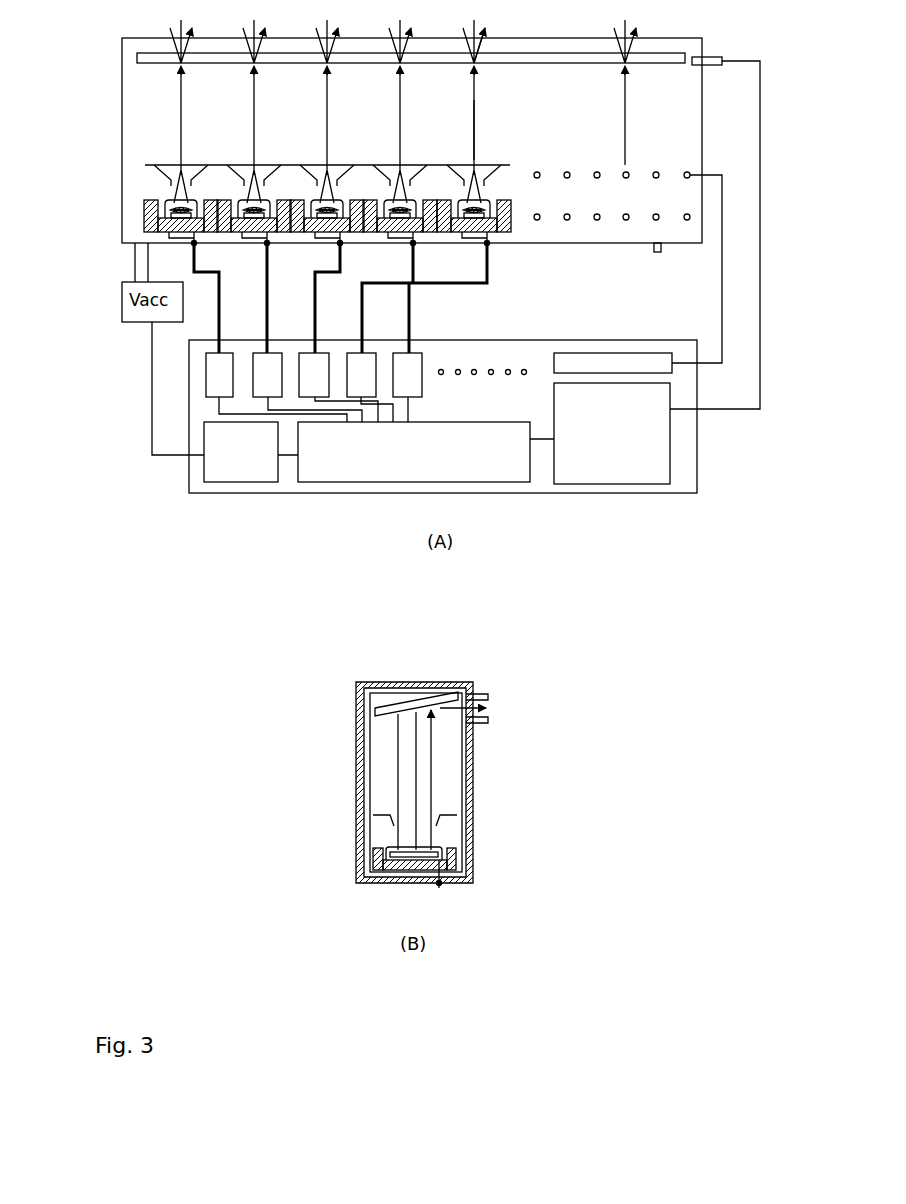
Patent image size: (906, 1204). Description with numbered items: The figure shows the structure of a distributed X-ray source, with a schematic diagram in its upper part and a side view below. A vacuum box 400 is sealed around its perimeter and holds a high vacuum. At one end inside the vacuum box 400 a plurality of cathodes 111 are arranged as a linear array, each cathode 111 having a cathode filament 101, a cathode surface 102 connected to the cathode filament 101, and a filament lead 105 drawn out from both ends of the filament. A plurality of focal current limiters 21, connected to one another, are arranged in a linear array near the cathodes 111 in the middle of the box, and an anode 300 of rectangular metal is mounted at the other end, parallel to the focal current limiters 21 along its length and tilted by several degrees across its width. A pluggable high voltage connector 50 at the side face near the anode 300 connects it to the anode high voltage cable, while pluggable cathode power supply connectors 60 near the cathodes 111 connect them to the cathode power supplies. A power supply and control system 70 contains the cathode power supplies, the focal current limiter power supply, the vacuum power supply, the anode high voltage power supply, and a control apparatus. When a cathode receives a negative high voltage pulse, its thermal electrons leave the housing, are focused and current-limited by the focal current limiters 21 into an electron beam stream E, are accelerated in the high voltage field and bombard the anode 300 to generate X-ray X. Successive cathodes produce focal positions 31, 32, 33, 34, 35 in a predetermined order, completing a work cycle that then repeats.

The vacuum box 400 is at (147, 40).
The anode 300 is at (137, 66).
The pluggable high voltage connector 50 is at (724, 56).
The focus 31 is at (190, 66).
The focal position 32 is at (263, 66).
The focal position 33 is at (336, 66).
The focal position 34 is at (409, 66).
The focal position 35 is at (483, 66).
The X-ray X is at (486, 42).
The electron beam stream E is at (476, 132).
The focal current limiters 21 is at (147, 166).
The cathodes 111 is at (142, 208).
The cathode filament 101 is at (168, 214).
The cathode surface 102 is at (170, 207).
The filament lead 105 is at (167, 221).
The pluggable cathode power supply connectors 60 is at (661, 252).
The power supply and control system 70 is at (698, 440).